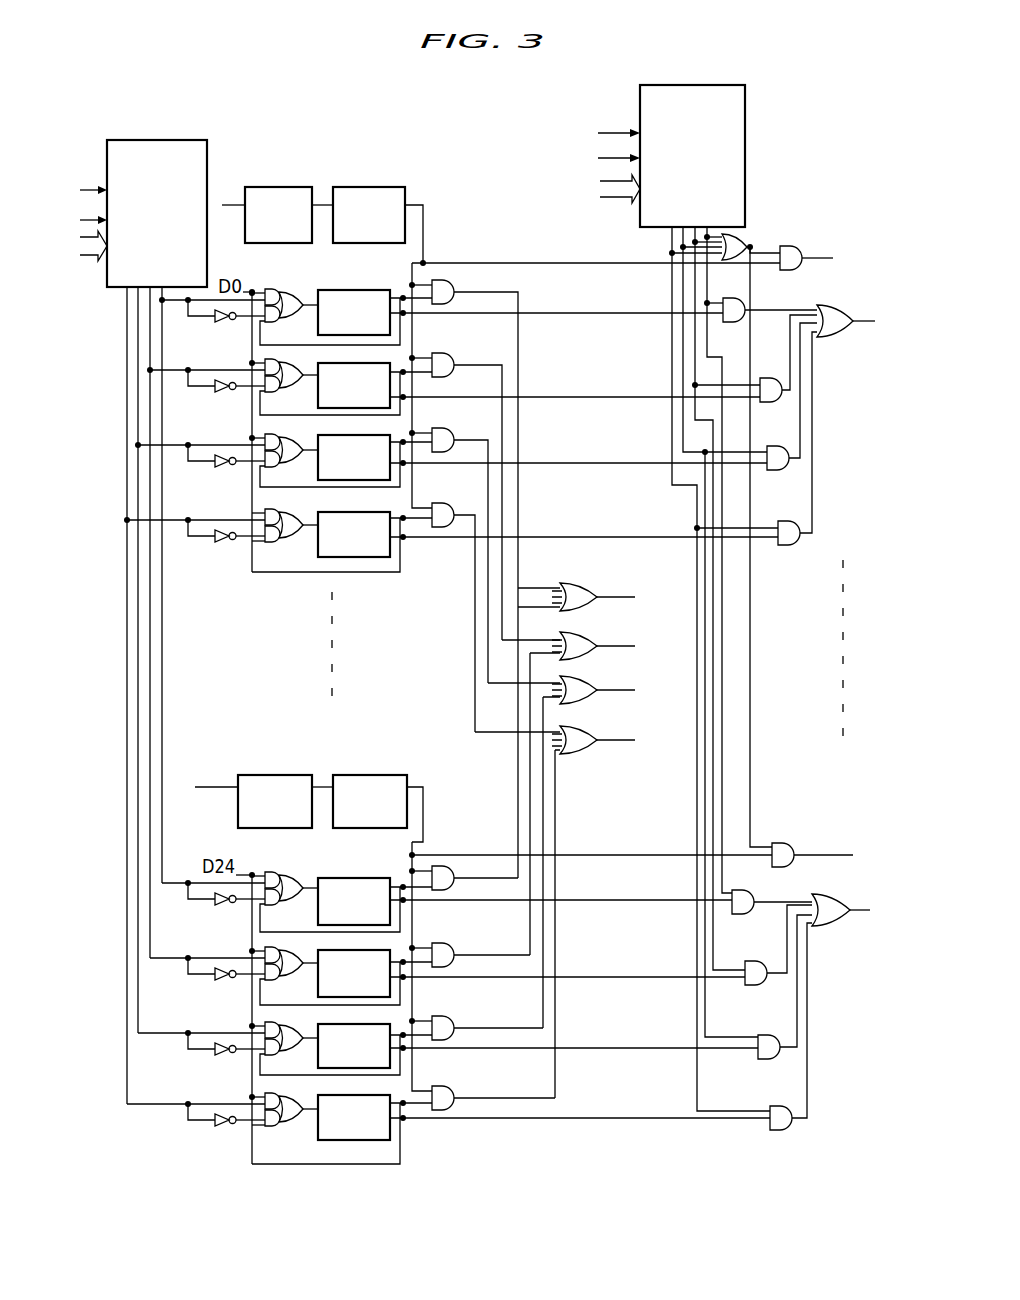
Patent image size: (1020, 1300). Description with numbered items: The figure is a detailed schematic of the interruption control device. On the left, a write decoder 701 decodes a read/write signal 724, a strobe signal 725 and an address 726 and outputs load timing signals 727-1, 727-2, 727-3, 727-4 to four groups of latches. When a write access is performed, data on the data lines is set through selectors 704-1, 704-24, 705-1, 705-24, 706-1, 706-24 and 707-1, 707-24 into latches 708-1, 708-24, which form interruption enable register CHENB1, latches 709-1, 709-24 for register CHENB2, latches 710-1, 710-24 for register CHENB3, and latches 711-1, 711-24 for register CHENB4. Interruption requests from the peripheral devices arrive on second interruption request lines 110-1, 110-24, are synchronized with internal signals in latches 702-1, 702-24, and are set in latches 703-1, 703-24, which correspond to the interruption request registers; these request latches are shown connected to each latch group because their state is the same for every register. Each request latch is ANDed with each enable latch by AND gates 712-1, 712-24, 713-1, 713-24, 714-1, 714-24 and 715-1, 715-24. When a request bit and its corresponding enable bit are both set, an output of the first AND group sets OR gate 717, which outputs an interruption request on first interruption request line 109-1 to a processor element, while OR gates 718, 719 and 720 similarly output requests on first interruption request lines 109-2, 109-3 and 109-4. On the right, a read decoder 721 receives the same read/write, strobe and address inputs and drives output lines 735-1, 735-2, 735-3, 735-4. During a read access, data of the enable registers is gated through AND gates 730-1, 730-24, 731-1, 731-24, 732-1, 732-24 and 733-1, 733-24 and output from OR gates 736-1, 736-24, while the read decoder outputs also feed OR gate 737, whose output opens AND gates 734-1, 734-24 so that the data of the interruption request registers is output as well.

The write decoder 701 is at (163, 140).
The read decoder 721 is at (745, 160).
The read/write signal 724 is at (86, 188).
The strobe signal 725 is at (78, 224).
The address 726 is at (84, 254).
The load timing signal 727-1 is at (160, 326).
The load timing signal 727-2 is at (148, 357).
The load timing signal 727-3 is at (136, 385).
The load timing signal 727-4 is at (126, 414).
The second interruption request line 110-1 is at (226, 200).
The second interruption request line 110-24 is at (208, 785).
The latch 702-1 is at (279, 187).
The latch 702-24 is at (279, 775).
The latch 703-1 is at (359, 187).
The latch 703-24 is at (351, 775).
The selector 704-1 is at (271, 292).
The selector 704-24 is at (276, 861).
The selector 705-1 is at (268, 364).
The selector 705-24 is at (268, 950).
The selector 706-1 is at (268, 439).
The selector 706-24 is at (266, 1018).
The selector 707-1 is at (268, 514).
The selector 707-24 is at (266, 1092).
The latch 708-1 is at (350, 292).
The latch 708-24 is at (362, 862).
The latch 709-1 is at (384, 362).
The latch 709-24 is at (388, 950).
The latch 710-1 is at (384, 436).
The latch 710-24 is at (388, 1024).
The latch 711-1 is at (384, 512).
The latch 711-24 is at (388, 1095).
The AND gate 712-1 is at (442, 280).
The AND gate 712-24 is at (440, 866).
The AND gate 713-1 is at (455, 360).
The AND gate 713-24 is at (450, 954).
The AND gate 714-1 is at (455, 430).
The AND gate 714-24 is at (450, 1020).
The AND gate 715-1 is at (444, 528).
The AND gate 715-24 is at (444, 1111).
The OR gate 717 is at (580, 580).
The OR gate 718 is at (558, 636).
The OR gate 719 is at (558, 680).
The OR gate 720 is at (588, 754).
The first interruption request line 109-1 is at (598, 596).
The first interruption request line 109-2 is at (597, 646).
The first interruption request line 109-3 is at (597, 692).
The first interruption request line 109-4 is at (597, 740).
The AND gate 730-1 is at (722, 298).
The AND gate 730-24 is at (734, 914).
The AND gate 731-1 is at (774, 380).
The AND gate 731-24 is at (759, 985).
The AND gate 732-1 is at (774, 448).
The AND gate 732-24 is at (767, 1060).
The AND gate 733-1 is at (792, 548).
The AND gate 733-24 is at (778, 1131).
The AND gate 734-1 is at (795, 250).
The AND gate 734-24 is at (780, 842).
The read decoder output line 735-1 is at (672, 322).
The read decoder output line 735-2 is at (682, 345).
The read decoder output line 735-3 is at (694, 369).
The read decoder output line 735-4 is at (706, 433).
The OR gate 736-1 is at (824, 306).
The OR gate 736-24 is at (826, 896).
The OR gate 737 is at (740, 235).